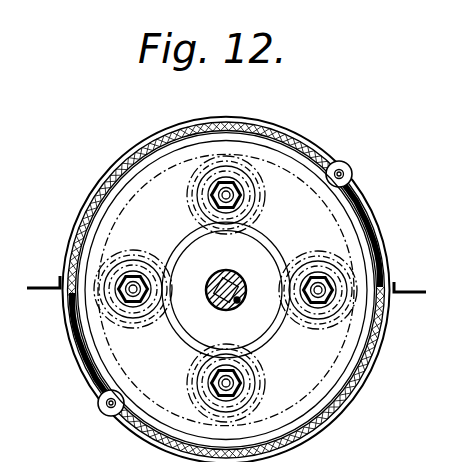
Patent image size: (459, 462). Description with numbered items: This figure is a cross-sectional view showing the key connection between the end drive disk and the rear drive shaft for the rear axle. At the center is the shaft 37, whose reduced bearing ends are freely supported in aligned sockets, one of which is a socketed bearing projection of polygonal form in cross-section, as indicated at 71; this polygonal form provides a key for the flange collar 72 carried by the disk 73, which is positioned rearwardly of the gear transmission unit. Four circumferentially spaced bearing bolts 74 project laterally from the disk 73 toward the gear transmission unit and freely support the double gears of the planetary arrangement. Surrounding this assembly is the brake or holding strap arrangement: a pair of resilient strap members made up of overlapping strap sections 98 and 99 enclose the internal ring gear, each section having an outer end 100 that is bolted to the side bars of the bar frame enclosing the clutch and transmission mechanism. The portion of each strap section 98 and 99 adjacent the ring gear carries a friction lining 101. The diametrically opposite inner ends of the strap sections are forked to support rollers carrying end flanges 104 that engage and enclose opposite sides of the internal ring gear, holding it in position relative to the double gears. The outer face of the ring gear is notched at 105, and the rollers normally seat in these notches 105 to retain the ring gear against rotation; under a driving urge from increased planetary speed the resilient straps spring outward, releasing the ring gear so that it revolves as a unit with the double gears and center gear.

The shaft 37 is at (210, 278).
The polygonal key 71 is at (238, 302).
The flange collar 72 is at (238, 273).
The disk 73 is at (366, 262).
The bearing bolts 74 is at (133, 287).
The strap section 98 is at (216, 118).
The strap section 99 is at (72, 354).
The outer end 100 is at (39, 283).
The friction lining 101 is at (288, 141).
The end flanges 104 is at (343, 165).
The notches 105 is at (357, 205).